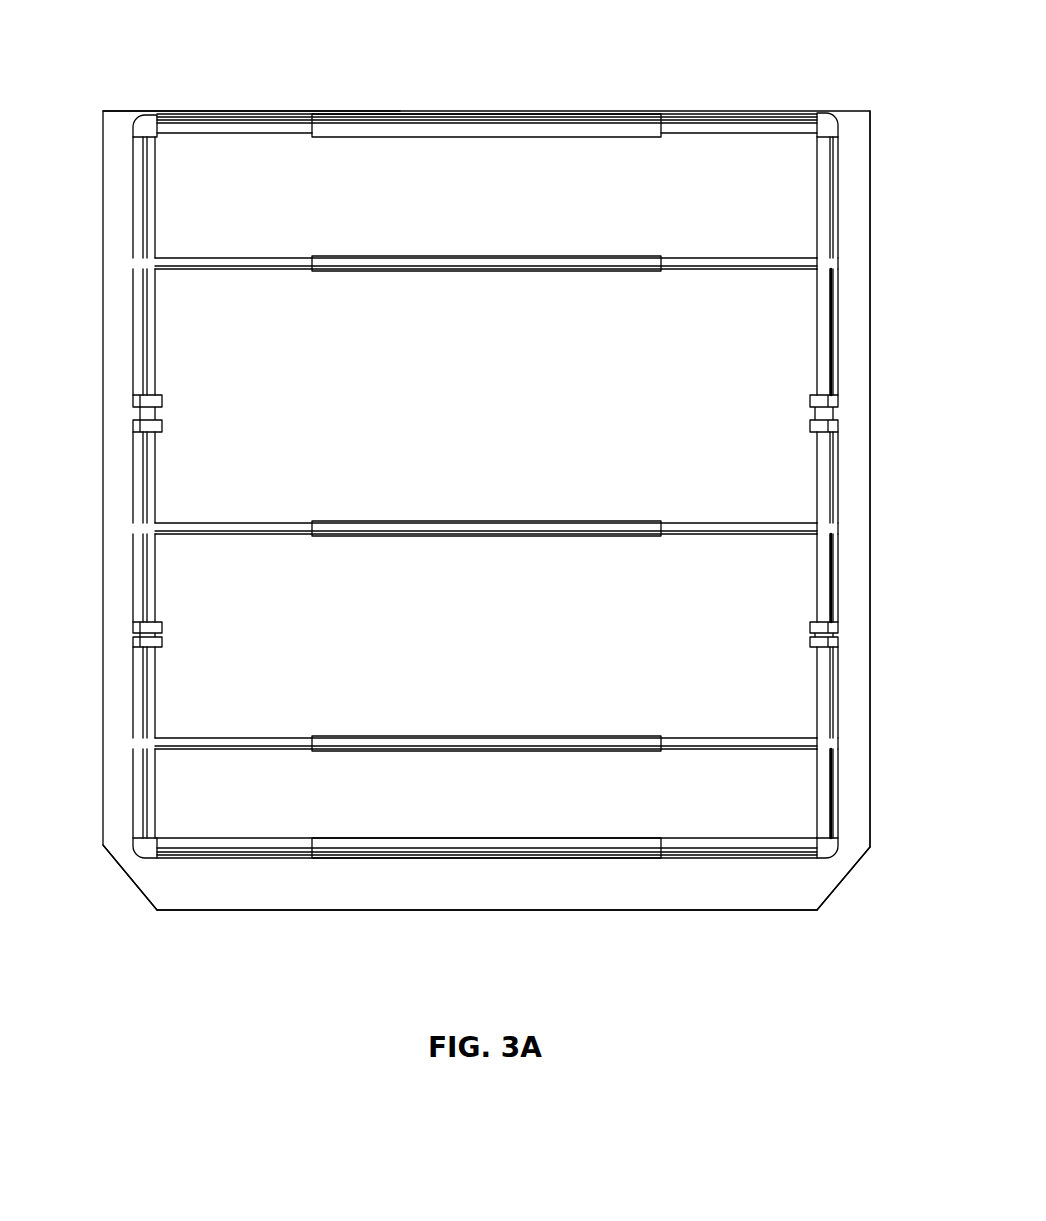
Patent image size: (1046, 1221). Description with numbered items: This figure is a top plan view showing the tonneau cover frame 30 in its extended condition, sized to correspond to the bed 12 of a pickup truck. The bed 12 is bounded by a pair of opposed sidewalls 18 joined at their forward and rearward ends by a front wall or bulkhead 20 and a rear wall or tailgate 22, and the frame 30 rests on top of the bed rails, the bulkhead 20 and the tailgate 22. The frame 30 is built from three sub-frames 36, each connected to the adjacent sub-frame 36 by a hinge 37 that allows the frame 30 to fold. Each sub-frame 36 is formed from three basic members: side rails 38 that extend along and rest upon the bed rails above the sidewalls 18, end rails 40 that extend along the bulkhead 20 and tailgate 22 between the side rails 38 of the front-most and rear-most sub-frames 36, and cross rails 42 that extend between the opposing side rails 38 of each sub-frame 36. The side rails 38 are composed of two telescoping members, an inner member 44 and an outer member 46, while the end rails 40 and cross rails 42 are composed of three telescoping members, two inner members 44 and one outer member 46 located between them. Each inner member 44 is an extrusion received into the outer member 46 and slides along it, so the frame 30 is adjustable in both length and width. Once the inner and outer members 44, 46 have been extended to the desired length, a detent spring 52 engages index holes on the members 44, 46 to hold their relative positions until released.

The bed 12 is at (123, 947).
The sidewalls 18 is at (118, 828).
The front wall/bulkhead 20 is at (124, 111).
The rear wall/tailgate 22 is at (660, 906).
The frame 30 is at (886, 172).
The sub-frame 36 is at (847, 265).
The hinge 37 is at (140, 400).
The side rails 38 is at (837, 333).
The end rails 40 is at (635, 115).
The cross rails 42 is at (447, 270).
The inner member 44 is at (150, 181).
The outer member 46 is at (150, 305).
The detent spring 52 is at (313, 272).